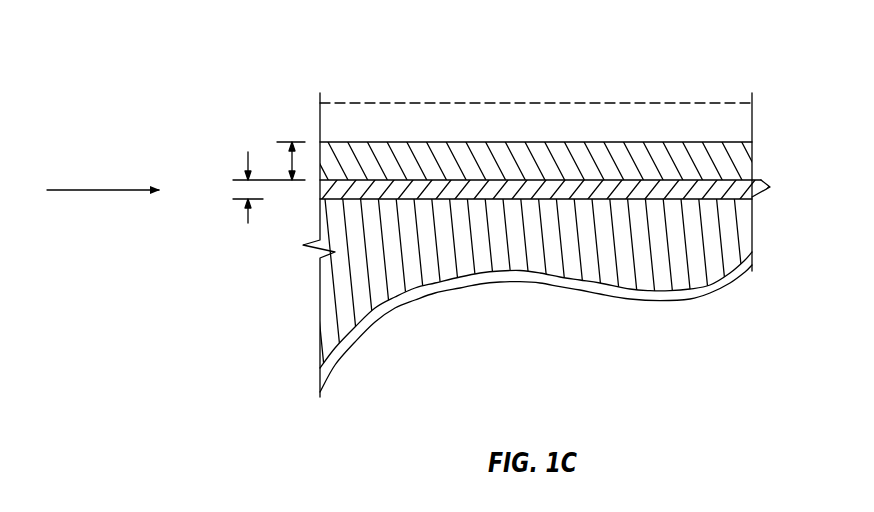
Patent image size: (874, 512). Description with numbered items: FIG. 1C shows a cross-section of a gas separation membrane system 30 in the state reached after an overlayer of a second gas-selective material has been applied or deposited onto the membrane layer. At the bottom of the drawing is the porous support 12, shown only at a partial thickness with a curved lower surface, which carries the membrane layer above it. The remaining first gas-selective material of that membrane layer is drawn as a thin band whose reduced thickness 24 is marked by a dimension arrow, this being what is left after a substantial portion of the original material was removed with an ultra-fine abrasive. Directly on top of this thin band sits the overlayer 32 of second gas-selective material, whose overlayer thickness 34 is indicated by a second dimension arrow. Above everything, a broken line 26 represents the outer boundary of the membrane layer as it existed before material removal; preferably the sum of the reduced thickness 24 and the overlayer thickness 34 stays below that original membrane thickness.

The gas separation membrane system 30 is at (637, 47).
The broken line 26 is at (514, 103).
The overlayer 32 is at (427, 148).
The overlayer thickness 34 is at (288, 158).
The reduced thickness 24 is at (238, 188).
The porous support 12 is at (398, 288).